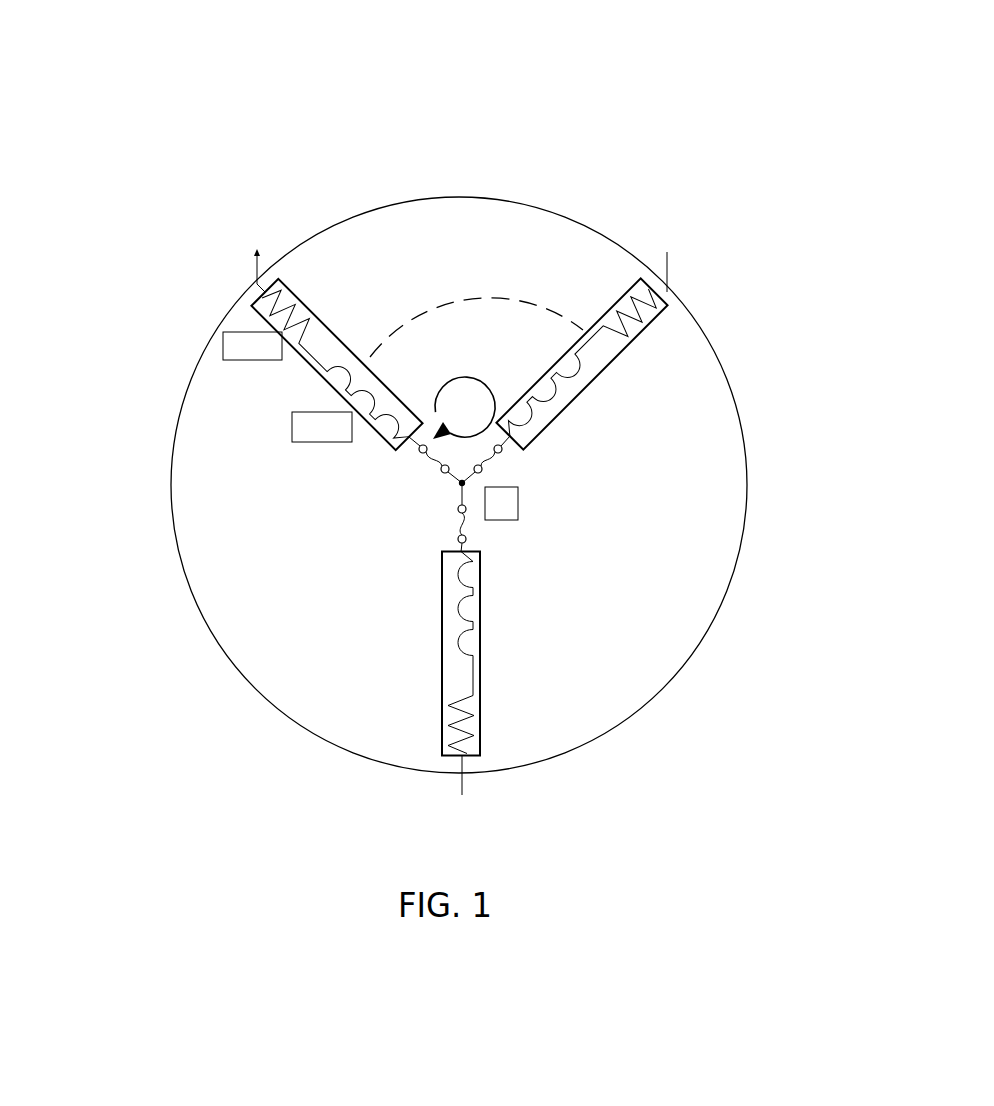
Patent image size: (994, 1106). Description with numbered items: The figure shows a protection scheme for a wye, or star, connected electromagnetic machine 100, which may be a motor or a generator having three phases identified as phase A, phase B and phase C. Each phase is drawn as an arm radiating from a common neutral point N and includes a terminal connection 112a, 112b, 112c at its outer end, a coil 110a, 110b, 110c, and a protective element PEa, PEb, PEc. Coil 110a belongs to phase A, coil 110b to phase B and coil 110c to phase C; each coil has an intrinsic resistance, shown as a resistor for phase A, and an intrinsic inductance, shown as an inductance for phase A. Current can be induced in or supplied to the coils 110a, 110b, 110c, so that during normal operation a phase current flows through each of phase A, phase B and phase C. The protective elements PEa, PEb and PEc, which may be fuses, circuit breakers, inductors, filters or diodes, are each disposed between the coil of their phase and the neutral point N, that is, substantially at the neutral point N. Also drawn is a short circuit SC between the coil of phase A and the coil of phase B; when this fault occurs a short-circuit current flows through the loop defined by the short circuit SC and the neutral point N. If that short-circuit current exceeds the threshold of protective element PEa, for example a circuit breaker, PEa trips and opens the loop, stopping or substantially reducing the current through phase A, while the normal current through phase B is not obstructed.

The electromagnetic machine 100 is at (480, 101).
The coil 110a is at (338, 337).
The coil 110b is at (618, 357).
The coil 110c is at (442, 625).
The terminal connection 112a is at (240, 255).
The terminal connection 112b is at (668, 256).
The terminal connection 112c is at (437, 791).
The phase A is at (222, 398).
The phase B is at (666, 336).
The phase C is at (502, 706).
The short circuit SC is at (438, 305).
The neutral point N is at (489, 501).
The protective element PEa is at (428, 455).
The protective element PEb is at (487, 460).
The protective element PEc is at (463, 520).